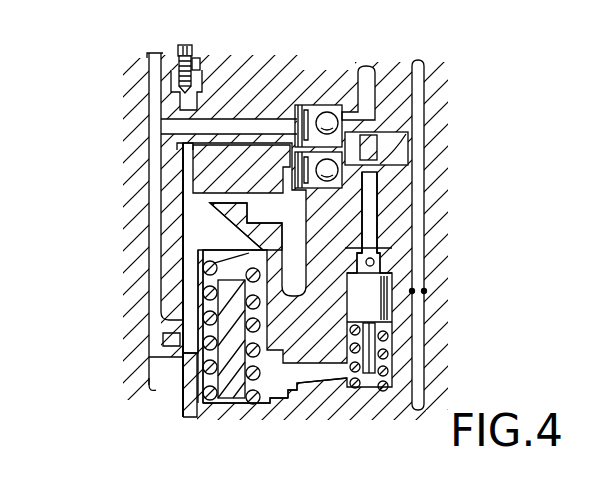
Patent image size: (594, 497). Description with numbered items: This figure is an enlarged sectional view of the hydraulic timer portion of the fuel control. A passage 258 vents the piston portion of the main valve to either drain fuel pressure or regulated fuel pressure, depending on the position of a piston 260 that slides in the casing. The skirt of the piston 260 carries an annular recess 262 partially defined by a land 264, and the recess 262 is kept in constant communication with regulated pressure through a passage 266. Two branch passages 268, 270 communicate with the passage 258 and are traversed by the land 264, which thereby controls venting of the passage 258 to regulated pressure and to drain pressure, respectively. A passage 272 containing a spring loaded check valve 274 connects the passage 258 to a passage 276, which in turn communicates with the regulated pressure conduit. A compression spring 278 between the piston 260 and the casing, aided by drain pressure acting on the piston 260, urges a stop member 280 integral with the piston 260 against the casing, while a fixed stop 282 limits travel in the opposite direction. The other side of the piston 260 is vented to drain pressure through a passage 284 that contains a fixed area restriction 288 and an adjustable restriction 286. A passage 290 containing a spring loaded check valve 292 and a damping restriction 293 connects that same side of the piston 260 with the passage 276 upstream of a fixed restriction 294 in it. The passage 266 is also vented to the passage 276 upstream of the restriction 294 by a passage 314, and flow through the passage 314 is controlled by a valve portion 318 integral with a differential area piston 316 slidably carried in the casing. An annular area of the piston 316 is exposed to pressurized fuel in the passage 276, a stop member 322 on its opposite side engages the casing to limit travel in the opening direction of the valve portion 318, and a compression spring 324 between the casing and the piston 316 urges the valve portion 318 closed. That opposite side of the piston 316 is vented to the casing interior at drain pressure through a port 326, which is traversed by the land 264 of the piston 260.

The passage 258 is at (147, 78).
The piston 260 is at (197, 231).
The annular recess 262 is at (200, 273).
The land 264 is at (180, 351).
The passage 266 is at (362, 70).
The branch passage 268 is at (200, 302).
The branch passage 270 is at (147, 388).
The passage 272 is at (241, 115).
The spring loaded check valve 274 is at (323, 118).
The passage 276 is at (427, 83).
The compression spring 278 is at (257, 378).
The stop member 280 is at (220, 212).
The fixed stop 282 is at (237, 377).
The passage 284 is at (177, 153).
The adjustable restriction 286 is at (180, 177).
The fixed area restriction 288 is at (190, 50).
The passage 290 is at (397, 145).
The spring loaded check valve 292 is at (347, 168).
The damping restriction 293 is at (262, 186).
The fixed restriction 294 is at (426, 292).
The passage 314 is at (378, 233).
The differential area piston 316 is at (377, 309).
The valve portion 318 is at (382, 267).
The stop member 322 is at (372, 342).
The compression spring 324 is at (380, 368).
The port 326 is at (293, 384).